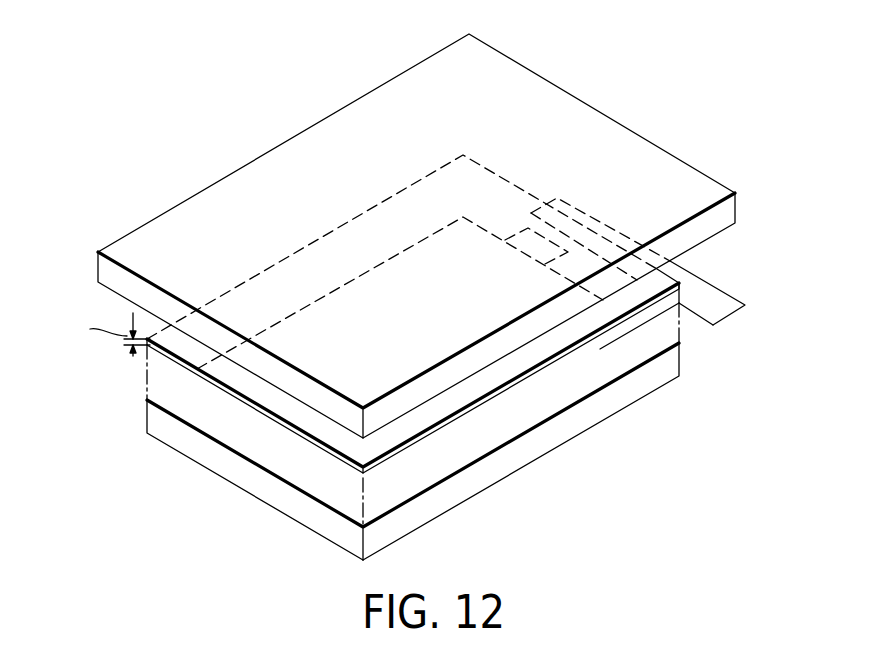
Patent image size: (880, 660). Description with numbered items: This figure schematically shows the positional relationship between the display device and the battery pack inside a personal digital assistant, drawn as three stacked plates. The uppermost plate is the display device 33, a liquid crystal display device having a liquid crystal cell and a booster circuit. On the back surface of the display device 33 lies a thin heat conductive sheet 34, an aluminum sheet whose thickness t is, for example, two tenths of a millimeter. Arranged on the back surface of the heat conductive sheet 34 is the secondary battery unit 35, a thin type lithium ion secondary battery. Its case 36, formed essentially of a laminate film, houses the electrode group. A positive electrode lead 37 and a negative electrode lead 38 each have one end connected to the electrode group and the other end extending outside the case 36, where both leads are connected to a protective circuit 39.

The display device 33 is at (106, 270).
The heat conductive sheet 34 is at (150, 348).
The secondary battery unit 35 is at (245, 500).
The case 36 is at (547, 443).
The positive electrode lead 37 is at (688, 317).
The negative electrode lead 38 is at (512, 240).
The protective circuit 39 is at (722, 298).